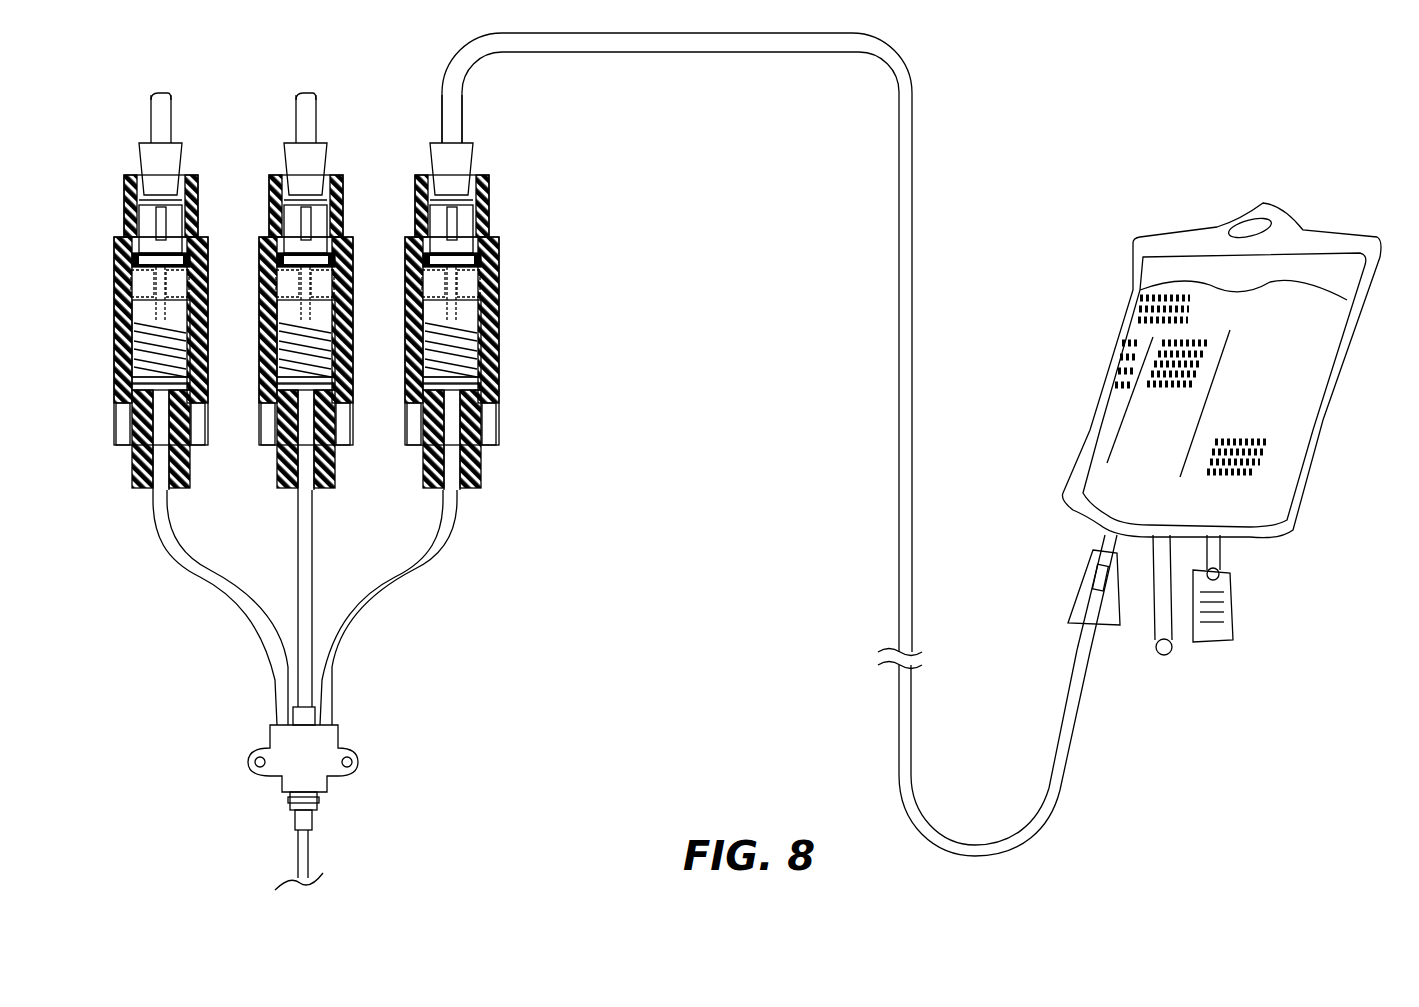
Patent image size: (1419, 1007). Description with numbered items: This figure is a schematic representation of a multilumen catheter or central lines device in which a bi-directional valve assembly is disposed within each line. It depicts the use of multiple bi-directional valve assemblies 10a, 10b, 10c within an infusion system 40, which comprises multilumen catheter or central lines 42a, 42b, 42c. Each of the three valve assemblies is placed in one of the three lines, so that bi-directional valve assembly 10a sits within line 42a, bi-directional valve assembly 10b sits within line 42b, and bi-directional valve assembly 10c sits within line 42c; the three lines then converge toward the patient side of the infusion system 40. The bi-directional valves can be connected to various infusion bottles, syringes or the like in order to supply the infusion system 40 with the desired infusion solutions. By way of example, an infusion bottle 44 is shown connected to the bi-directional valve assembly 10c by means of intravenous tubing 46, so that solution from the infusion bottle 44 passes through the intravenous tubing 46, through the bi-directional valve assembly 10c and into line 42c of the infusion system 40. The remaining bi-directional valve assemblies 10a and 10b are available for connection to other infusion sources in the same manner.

The bi-directional valve assembly 10a is at (110, 263).
The bi-directional valve assembly 10b is at (255, 263).
The bi-directional valve assembly 10c is at (401, 263).
The infusion system 40 is at (412, 685).
The multilumen catheter or central line 42a is at (170, 553).
The multilumen catheter or central line 42b is at (298, 530).
The multilumen catheter or central line 42c is at (413, 558).
The infusion bottle 44 is at (1329, 409).
The intravenous tubing 46 is at (899, 302).